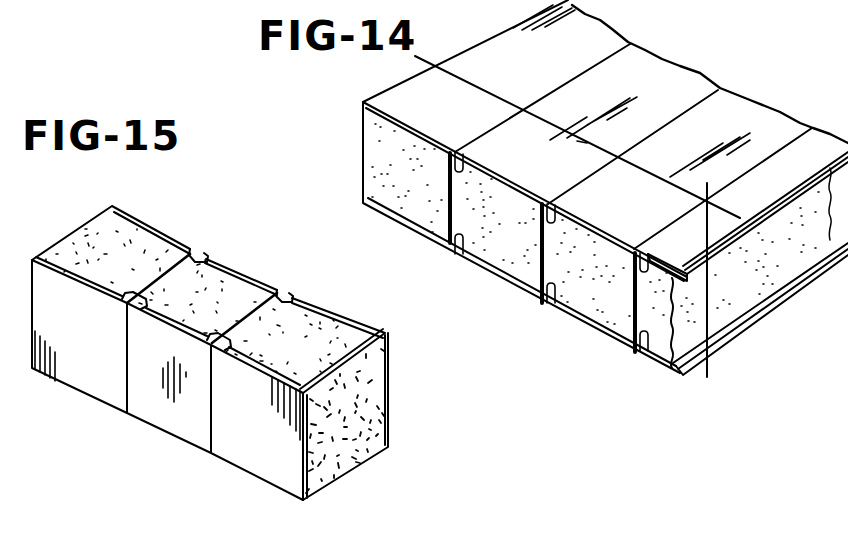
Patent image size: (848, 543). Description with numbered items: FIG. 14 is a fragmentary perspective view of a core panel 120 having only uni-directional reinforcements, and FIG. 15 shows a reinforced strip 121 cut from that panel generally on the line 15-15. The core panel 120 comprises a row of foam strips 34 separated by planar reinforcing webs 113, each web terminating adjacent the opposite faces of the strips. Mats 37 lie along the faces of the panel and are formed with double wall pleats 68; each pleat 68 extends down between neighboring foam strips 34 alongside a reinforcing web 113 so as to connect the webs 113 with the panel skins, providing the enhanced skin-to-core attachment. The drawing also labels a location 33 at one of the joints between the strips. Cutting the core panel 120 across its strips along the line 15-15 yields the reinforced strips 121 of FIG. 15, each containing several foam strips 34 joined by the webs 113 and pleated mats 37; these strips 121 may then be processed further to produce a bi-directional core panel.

In FIG. 14, the core panel 120 is at (706, 73).
In FIG. 15, the reinforced strip 121 is at (125, 422).
In FIG. 14, the mat 37 is at (384, 94).
In FIG. 15, the mat 37 is at (53, 268).
In FIG. 14, the foam strip 34 is at (374, 154).
In FIG. 15, the foam strip 34 is at (107, 224).
In FIG. 14, the double wall pleat 68 is at (463, 171).
In FIG. 15, the double wall pleat 68 is at (140, 307).
In FIG. 14, the panel joint 33 is at (452, 204).
In FIG. 14, the planar reinforcing web 113 is at (630, 308).
In FIG. 15, the planar reinforcing web 113 is at (165, 268).
In FIG. 14, the section line 15- 15 is at (596, 199).